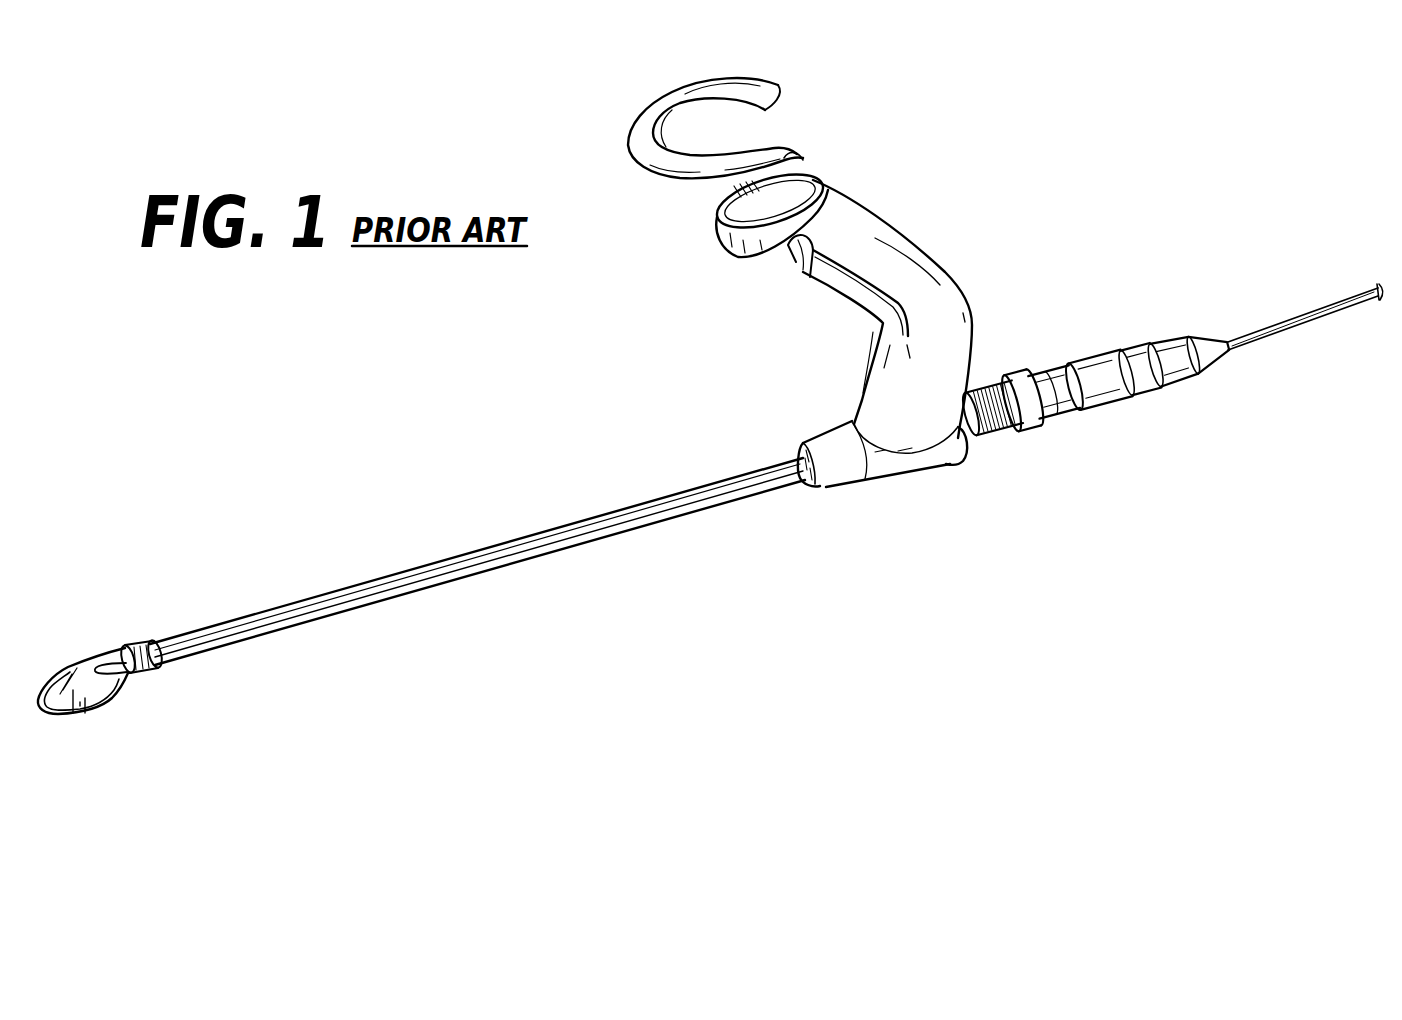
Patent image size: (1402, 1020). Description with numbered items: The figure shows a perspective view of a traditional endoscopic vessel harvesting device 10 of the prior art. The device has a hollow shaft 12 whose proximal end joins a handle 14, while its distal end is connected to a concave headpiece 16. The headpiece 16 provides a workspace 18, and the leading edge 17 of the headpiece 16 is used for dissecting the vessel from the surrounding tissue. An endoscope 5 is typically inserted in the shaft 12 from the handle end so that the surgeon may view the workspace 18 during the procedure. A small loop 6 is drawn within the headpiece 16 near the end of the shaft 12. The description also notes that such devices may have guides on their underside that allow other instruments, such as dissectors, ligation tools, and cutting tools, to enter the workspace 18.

The surgical instrument 10 is at (557, 460).
The hollow shaft 12 is at (374, 582).
The handle 14 is at (872, 231).
The endoscope 5 is at (1100, 357).
The concave headpiece 16 is at (74, 663).
The tip edge 17 is at (103, 713).
The workspace 18 is at (76, 712).
The loop 6 is at (126, 675).